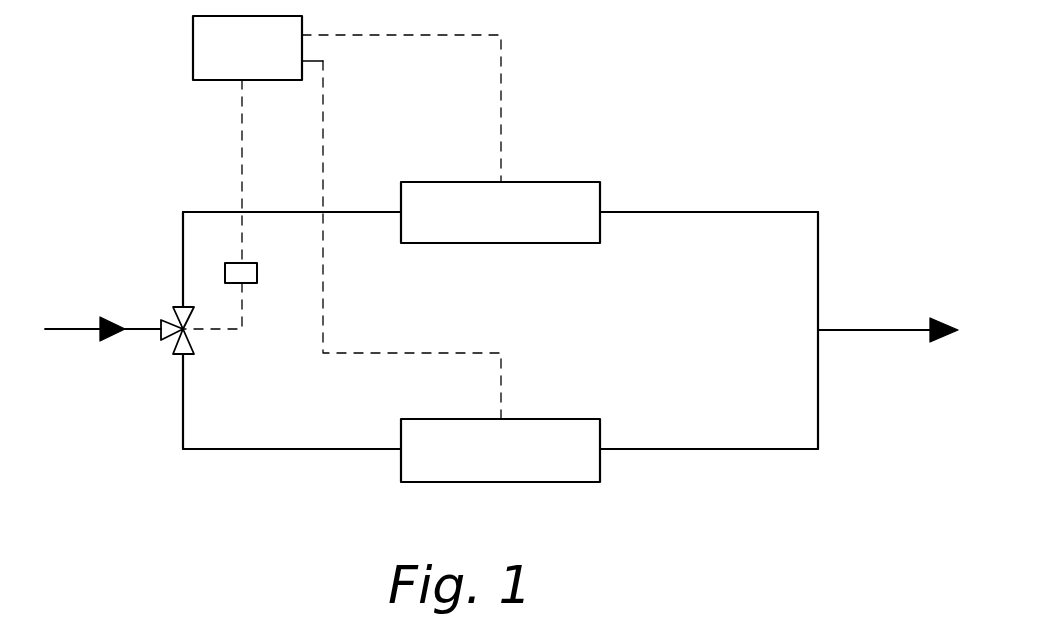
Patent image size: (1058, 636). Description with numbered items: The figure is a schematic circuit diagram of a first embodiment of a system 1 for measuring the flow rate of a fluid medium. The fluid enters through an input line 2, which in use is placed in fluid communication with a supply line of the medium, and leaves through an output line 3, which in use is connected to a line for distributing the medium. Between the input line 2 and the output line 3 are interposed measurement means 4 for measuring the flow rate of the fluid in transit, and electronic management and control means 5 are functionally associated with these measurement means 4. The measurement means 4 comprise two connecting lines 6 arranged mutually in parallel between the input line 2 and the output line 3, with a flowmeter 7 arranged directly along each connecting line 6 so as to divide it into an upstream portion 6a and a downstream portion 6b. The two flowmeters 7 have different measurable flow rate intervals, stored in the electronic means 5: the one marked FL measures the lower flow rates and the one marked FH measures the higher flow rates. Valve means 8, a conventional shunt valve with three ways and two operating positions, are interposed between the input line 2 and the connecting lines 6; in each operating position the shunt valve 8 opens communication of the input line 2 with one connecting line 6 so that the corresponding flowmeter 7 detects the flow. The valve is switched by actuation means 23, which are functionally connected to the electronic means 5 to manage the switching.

The system for measuring the flow rate of a fluid medium 1 is at (713, 132).
The input line 2 is at (73, 328).
The output line 3 is at (877, 330).
The measurement means 4 is at (550, 150).
The electronic management and control means 5 is at (193, 50).
The connecting line 6 is at (769, 208).
The upstream portion of the connecting line 6a is at (285, 212).
The downstream portion of the connecting line 6b is at (658, 212).
The flowmeter 7 is at (435, 182).
The valve means 8 is at (152, 354).
The sliding actuation means 23 is at (225, 270).